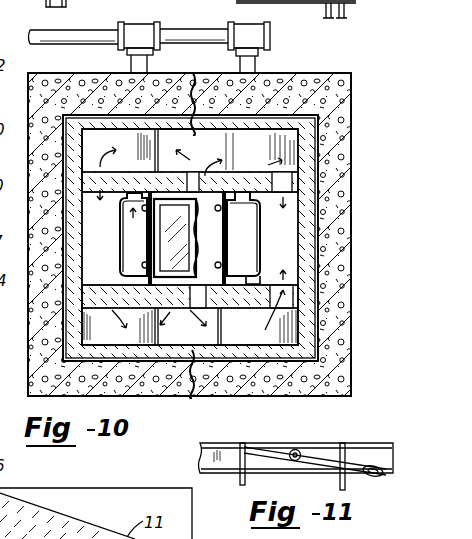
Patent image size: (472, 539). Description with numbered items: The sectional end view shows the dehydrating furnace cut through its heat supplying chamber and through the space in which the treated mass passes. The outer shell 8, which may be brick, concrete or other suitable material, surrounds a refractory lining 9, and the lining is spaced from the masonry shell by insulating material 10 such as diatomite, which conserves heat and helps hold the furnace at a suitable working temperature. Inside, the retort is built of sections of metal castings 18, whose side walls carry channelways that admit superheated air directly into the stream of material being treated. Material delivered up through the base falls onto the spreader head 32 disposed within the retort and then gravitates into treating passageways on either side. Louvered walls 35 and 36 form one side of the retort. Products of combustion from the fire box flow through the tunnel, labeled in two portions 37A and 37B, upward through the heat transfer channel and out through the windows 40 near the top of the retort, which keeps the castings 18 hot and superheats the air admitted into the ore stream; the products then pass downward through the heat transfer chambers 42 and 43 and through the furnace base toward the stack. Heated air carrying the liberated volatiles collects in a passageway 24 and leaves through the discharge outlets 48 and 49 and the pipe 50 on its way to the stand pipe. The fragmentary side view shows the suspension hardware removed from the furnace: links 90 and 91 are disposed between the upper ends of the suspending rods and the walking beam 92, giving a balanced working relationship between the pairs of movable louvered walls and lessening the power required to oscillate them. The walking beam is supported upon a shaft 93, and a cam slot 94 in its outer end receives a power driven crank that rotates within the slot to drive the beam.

In FIG. 10, the outer shell 8 is at (286, 110).
In FIG. 10, the refractory lining 9 is at (96, 100).
In FIG. 10, the insulating material 10 is at (314, 111).
In FIG. 10, the metal castings 18 is at (254, 281).
In FIG. 10, the passageway 24 is at (130, 238).
In FIG. 10, the spreader head 32 is at (183, 236).
In FIG. 10, the louvered wall 35 is at (148, 245).
In FIG. 10, the louvered wall 36 is at (229, 259).
In FIG. 10, the tunnel 37A is at (207, 108).
In FIG. 10, the tunnel 37B is at (165, 372).
In FIG. 10, the window 40 is at (190, 237).
In FIG. 10, the heat transfer chamber 42 is at (293, 218).
In FIG. 10, the heat transfer chamber 43 is at (73, 292).
In FIG. 10, the discharge outlet 48 is at (255, 71).
In FIG. 10, the discharge outlet 49 is at (147, 66).
In FIG. 10, the pipe 50 is at (176, 33).
In FIG. 11, the link 90 is at (243, 488).
In FIG. 11, the link 91 is at (346, 488).
In FIG. 11, the walking beam 92 is at (260, 445).
In FIG. 11, the shaft 93 is at (300, 450).
In FIG. 11, the cam slot 94 is at (366, 466).